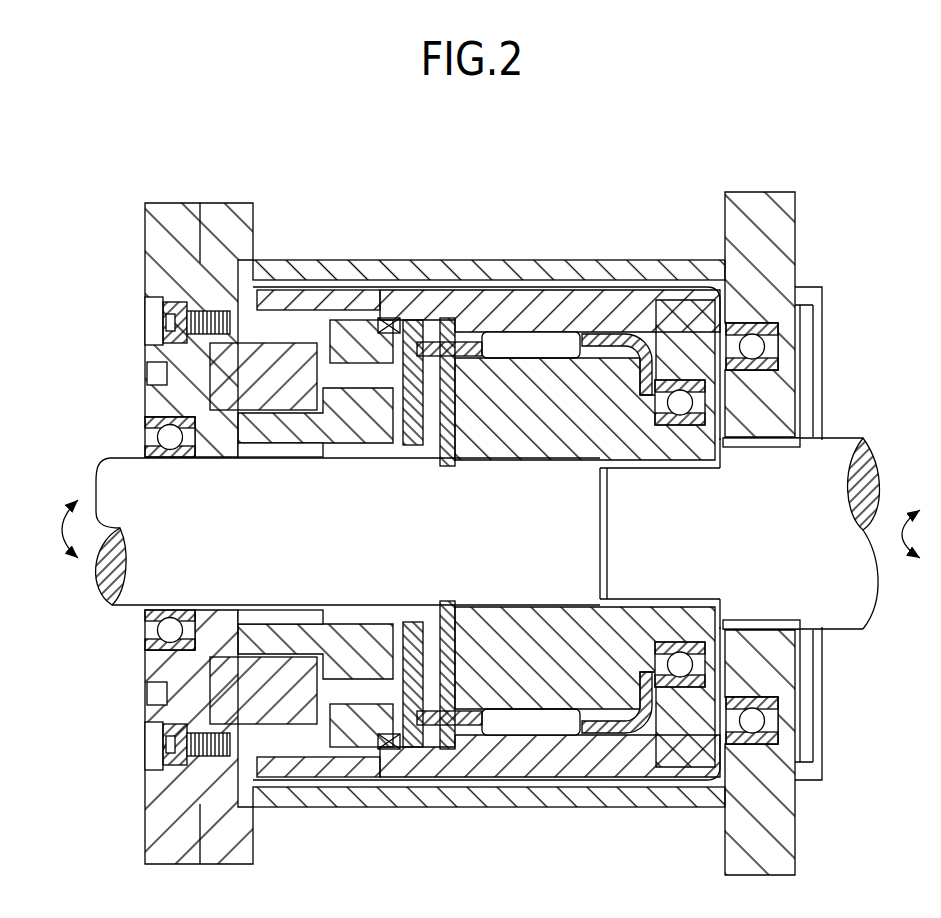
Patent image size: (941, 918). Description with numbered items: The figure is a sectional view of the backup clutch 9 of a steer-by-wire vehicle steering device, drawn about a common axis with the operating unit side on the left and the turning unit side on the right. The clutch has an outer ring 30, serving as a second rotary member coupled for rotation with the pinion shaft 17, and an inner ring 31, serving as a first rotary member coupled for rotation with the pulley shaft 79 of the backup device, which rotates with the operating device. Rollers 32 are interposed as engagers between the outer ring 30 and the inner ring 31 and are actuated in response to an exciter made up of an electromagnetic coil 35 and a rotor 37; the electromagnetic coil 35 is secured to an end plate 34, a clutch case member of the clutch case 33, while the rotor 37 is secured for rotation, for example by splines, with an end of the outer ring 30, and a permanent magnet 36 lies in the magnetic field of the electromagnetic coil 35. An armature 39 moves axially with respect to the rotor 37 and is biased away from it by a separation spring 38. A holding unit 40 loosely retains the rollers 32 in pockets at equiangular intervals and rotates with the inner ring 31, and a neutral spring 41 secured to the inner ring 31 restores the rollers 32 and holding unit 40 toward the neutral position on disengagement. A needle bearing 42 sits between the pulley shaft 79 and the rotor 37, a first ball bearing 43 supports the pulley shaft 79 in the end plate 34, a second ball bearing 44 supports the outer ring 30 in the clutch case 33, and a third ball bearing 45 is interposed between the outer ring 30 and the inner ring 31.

The backup clutch 9 is at (487, 492).
The pinion shaft 17 is at (760, 497).
The outer ring 30 is at (563, 533).
The inner ring 31 is at (676, 533).
The rollers 32 is at (550, 482).
The clutch case 33 is at (489, 827).
The end plate 34 is at (161, 533).
The electromagnetic coil 35 is at (193, 488).
The permanent magnet 36 is at (300, 460).
The rotor 37 is at (231, 511).
The separation spring 38 is at (375, 466).
The armature 39 is at (421, 465).
The holding unit 40 is at (627, 460).
The neutral spring 41 is at (473, 466).
The needle bearing 42 is at (150, 533).
The first ball bearing 43 is at (125, 640).
The second ball bearing 44 is at (821, 541).
The third ball bearing 45 is at (776, 543).
The pulley shaft 79 is at (143, 424).